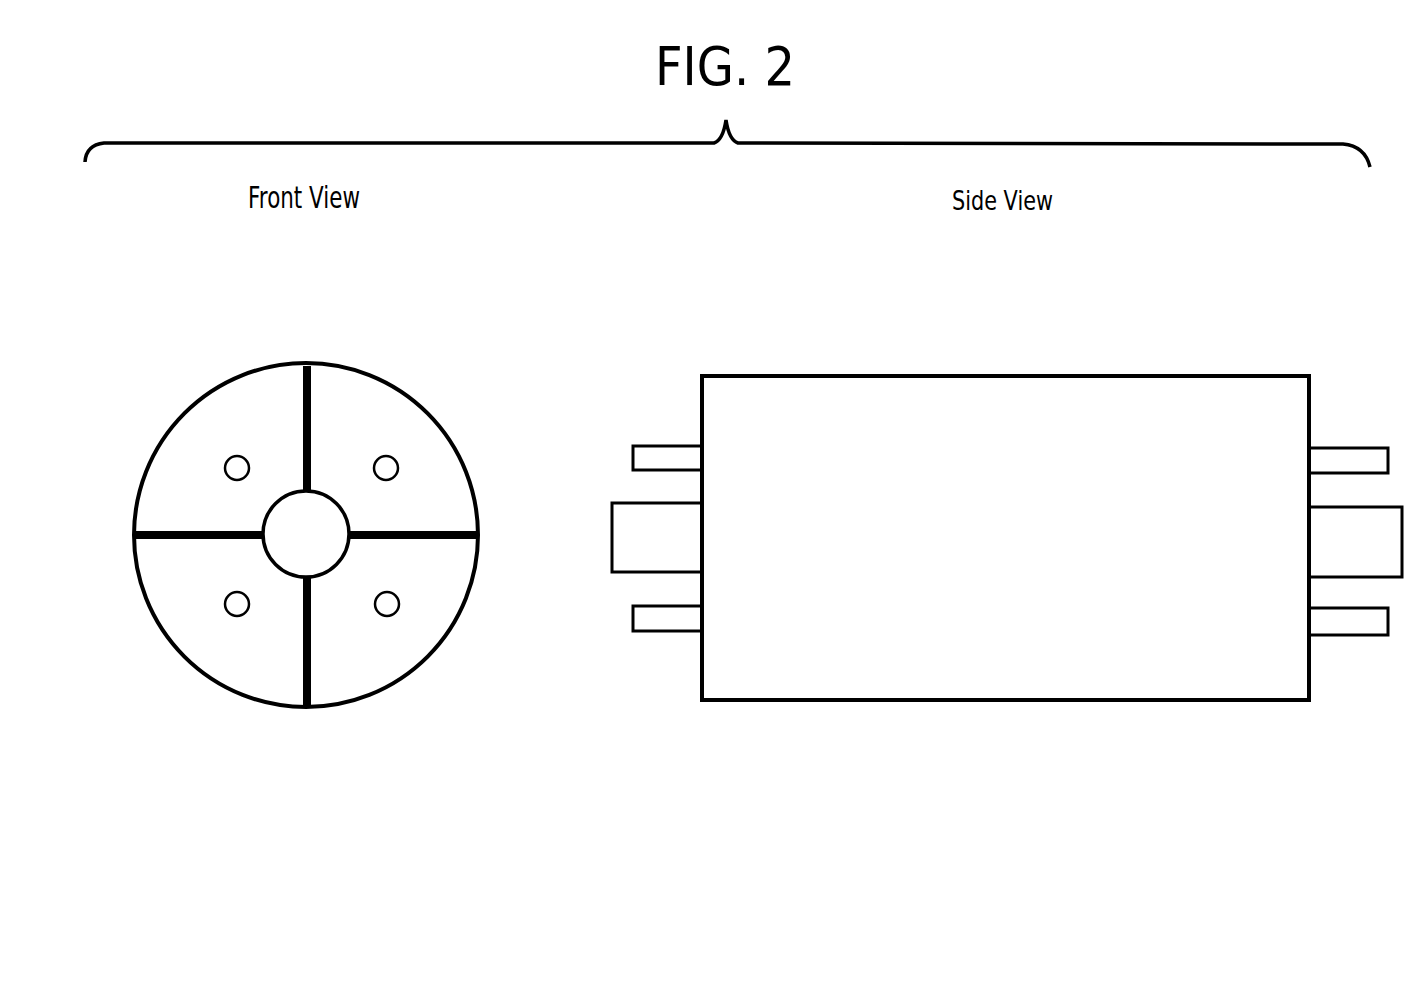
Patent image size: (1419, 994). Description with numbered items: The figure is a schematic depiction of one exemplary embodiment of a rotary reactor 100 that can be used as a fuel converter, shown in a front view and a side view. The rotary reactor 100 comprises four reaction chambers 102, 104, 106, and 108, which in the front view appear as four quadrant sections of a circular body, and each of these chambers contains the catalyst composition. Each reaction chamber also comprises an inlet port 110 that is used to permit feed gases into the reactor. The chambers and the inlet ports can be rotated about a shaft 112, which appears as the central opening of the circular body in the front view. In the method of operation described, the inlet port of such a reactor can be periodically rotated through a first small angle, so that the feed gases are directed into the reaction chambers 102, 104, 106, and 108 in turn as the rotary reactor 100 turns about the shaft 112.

The rotary reactor 100 is at (418, 341).
The reaction chamber 102 is at (194, 441).
The reaction chamber 104 is at (402, 441).
The reaction chamber 106 is at (402, 642).
The reaction chamber 108 is at (194, 641).
The inlet port 110 is at (384, 607).
The shaft 112 is at (272, 517).